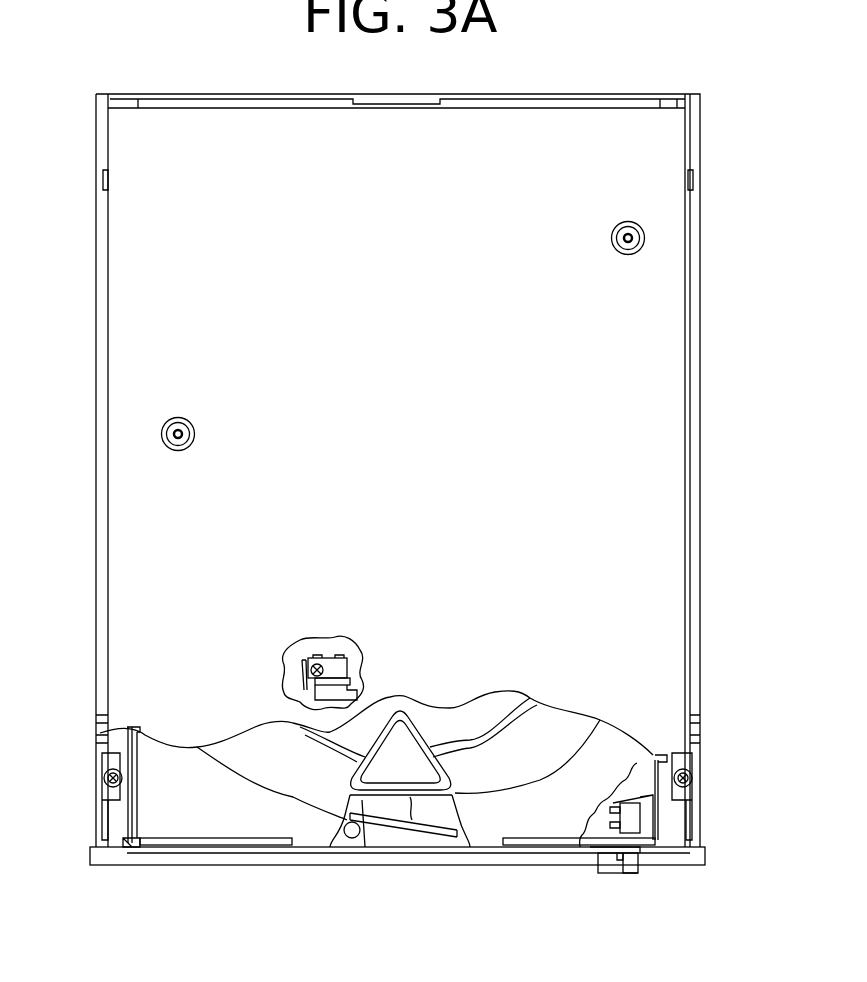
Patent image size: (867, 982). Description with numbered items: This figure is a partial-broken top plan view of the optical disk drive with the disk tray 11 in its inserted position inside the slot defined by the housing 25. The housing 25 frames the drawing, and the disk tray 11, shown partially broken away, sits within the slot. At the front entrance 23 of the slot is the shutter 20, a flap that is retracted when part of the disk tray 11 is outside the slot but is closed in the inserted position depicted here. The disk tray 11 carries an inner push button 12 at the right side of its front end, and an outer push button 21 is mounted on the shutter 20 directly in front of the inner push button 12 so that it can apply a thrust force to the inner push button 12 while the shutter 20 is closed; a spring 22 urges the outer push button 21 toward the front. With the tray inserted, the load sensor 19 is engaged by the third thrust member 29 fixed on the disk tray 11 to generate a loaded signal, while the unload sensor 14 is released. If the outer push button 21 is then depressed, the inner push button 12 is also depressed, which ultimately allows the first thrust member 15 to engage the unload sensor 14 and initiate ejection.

The disk tray 11 is at (172, 758).
The inner push button 12 is at (598, 852).
The unload sensor 14 is at (633, 807).
The first thrust member 15 is at (648, 822).
The load sensor 19 is at (332, 660).
The shutter 20 is at (197, 867).
The outer push button 21 is at (633, 873).
The spring 22 is at (603, 873).
The front entrance 23 is at (130, 837).
The housing 25 is at (703, 282).
The third thrust member 29 is at (360, 693).